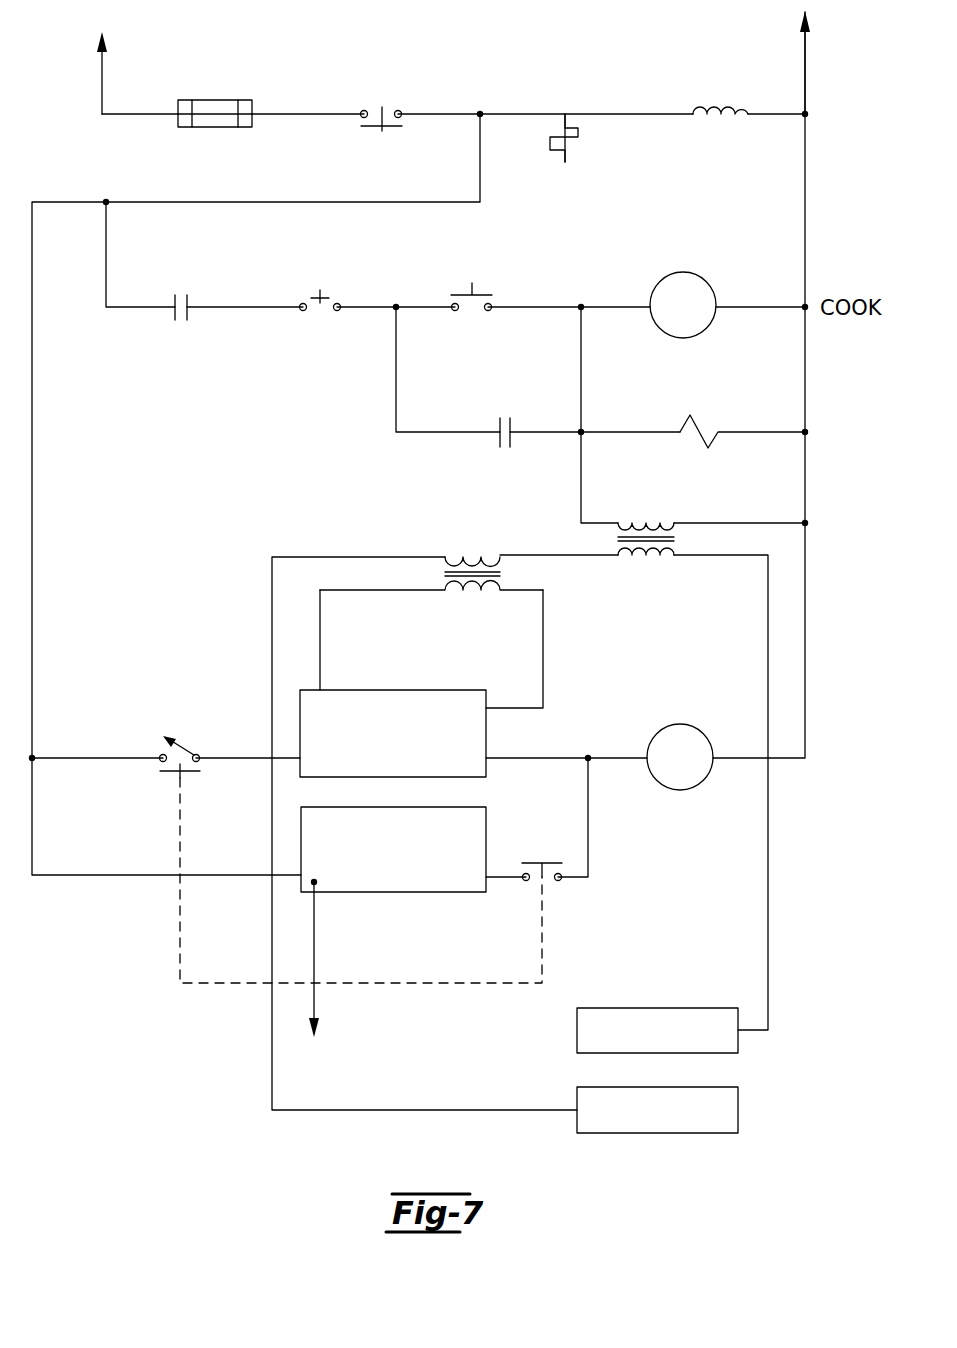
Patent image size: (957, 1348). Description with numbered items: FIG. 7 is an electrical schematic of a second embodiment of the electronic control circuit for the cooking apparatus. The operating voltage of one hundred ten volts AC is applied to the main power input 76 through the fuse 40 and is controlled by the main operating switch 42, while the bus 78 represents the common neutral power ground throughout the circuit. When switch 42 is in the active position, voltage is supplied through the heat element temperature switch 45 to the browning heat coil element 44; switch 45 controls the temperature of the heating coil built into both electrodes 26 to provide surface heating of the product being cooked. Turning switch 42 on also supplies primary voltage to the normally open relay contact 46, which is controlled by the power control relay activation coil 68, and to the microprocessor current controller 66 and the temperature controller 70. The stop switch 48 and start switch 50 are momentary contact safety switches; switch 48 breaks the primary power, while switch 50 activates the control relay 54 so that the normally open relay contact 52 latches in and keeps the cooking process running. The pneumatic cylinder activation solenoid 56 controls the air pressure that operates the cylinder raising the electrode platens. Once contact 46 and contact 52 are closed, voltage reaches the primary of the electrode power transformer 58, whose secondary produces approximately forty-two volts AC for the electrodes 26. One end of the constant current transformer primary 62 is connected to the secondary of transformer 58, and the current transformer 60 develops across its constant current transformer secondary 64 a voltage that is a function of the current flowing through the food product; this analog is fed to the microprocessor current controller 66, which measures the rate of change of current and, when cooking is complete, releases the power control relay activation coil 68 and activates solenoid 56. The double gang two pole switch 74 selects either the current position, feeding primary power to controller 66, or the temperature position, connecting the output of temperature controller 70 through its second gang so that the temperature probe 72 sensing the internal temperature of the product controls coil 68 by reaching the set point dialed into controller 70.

The electrodes 26 is at (658, 1008).
The fuse 40 is at (210, 128).
The main operating switch 42 is at (390, 130).
The browning heat coil element 44 is at (719, 118).
The heat element temperature switch 45 is at (566, 110).
The normally open relay contact 46 is at (183, 322).
The stop switch 48 is at (330, 316).
The start switch 50 is at (456, 315).
The normally open relay contact 52 is at (506, 416).
The control relay 54 is at (683, 272).
The pneumatic cylinder activation solenoid 56 is at (690, 415).
The electrode power transformer 58 is at (613, 540).
The current transformer 60 is at (508, 574).
The constant current transformer primary 62 is at (447, 556).
The constant current transformer secondary 64 is at (476, 594).
The microprocessor current controller 66 is at (395, 690).
The power control relay activation coil 68 is at (681, 724).
The temperature controller 70 is at (393, 893).
The temperature probe 72 is at (322, 1033).
The double gang two pole switch 74 is at (200, 772).
The main power input 76 is at (97, 38).
The bus 78 is at (800, 16).